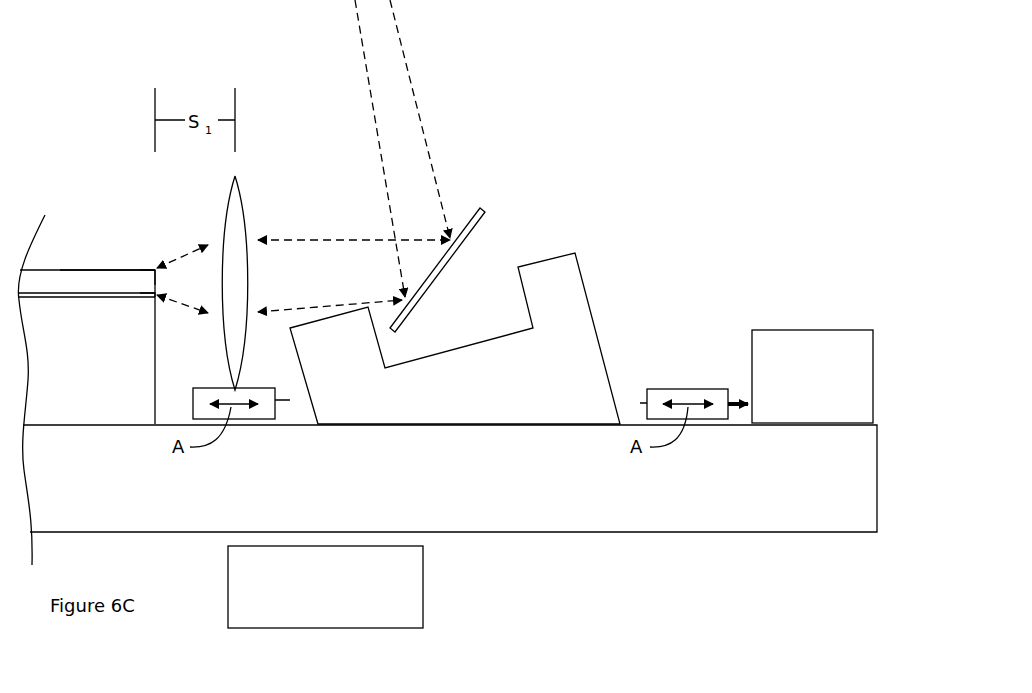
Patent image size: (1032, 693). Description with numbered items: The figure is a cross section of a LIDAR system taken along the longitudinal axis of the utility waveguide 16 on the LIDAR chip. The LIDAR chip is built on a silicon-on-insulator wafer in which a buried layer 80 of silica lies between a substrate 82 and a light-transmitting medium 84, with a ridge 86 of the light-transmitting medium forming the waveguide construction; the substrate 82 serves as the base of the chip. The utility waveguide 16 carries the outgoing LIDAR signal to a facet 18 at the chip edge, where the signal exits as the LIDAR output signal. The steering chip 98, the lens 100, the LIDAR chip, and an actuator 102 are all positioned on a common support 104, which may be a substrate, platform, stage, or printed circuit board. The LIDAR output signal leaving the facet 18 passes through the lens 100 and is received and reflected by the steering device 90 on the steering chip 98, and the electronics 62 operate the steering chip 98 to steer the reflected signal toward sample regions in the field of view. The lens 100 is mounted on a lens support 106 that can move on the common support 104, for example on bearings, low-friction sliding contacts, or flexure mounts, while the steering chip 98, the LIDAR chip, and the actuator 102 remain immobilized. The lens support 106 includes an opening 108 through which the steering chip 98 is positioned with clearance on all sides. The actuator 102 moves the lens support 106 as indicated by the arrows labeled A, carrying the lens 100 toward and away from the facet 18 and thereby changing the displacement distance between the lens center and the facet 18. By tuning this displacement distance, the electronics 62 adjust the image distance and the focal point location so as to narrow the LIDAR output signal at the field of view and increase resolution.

The utility waveguide 16 is at (148, 257).
The facet 18 is at (153, 285).
The electronics 62 is at (228, 571).
The buried layer 80 is at (97, 297).
The substrate 82 is at (105, 402).
The light-transmitting medium 84 is at (83, 277).
The ridge 86 is at (101, 268).
The steering device 90 is at (481, 221).
The steering chip 98 is at (601, 296).
The lens 100 is at (245, 226).
The actuator 102 is at (757, 330).
The common support 104 is at (553, 515).
The lens support 106 is at (250, 420).
The opening 108 is at (277, 403).